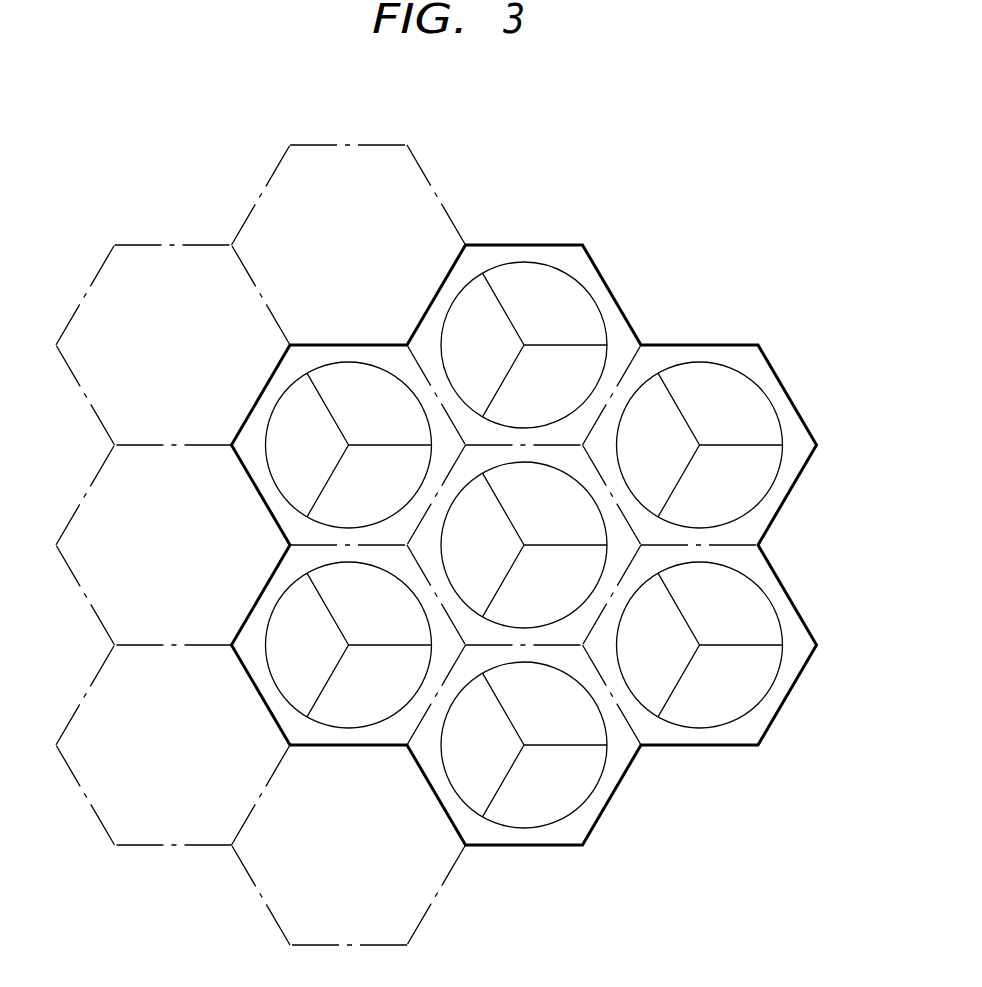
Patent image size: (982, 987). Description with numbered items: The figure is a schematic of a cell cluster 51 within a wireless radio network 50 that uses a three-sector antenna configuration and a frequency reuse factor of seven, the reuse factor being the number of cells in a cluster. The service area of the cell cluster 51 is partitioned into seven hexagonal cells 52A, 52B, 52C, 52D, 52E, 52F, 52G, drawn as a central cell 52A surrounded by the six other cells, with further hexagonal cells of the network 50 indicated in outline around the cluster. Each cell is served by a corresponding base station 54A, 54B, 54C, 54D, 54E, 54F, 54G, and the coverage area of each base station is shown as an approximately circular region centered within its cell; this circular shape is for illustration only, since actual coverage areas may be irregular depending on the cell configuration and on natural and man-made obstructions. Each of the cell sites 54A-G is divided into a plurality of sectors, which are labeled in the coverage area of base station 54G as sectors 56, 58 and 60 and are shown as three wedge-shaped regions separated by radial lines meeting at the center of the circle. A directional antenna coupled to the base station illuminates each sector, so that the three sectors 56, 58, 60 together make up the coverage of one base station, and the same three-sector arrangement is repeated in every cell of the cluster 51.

The wireless radio network 50 is at (182, 164).
The cell cluster 51 is at (656, 760).
The cell 52A is at (641, 548).
The cell 52B is at (703, 344).
The cell 52C is at (785, 702).
The cell 52D is at (523, 846).
The cell 52E is at (256, 690).
The cell 52F is at (252, 481).
The cell 52G is at (522, 243).
The base station 54A is at (604, 523).
The base station 54B is at (765, 392).
The base station 54C is at (778, 615).
The base station 54D is at (584, 805).
The base station 54E is at (274, 602).
The base station 54F is at (280, 398).
The base station 54G is at (583, 285).
The sector 56 is at (557, 319).
The sector 58 is at (557, 394).
The sector 60 is at (488, 361).